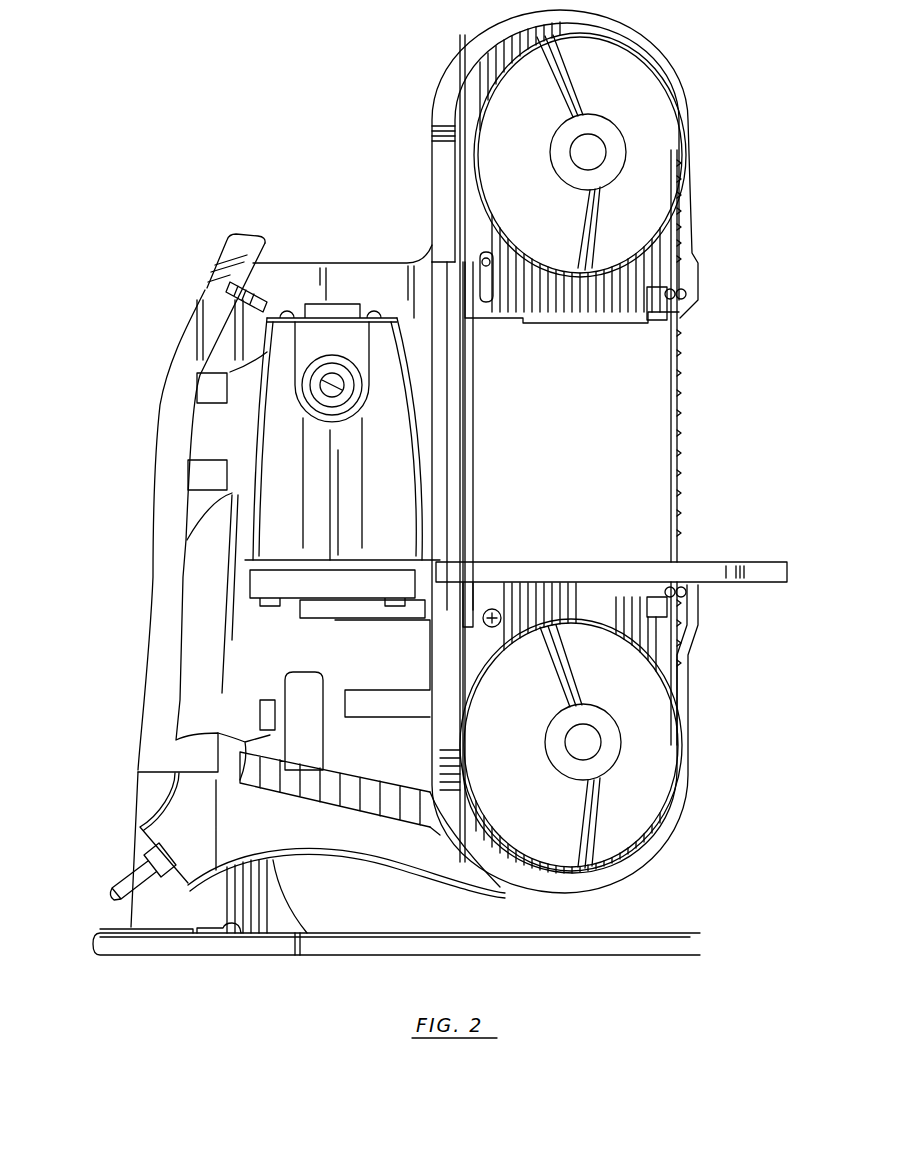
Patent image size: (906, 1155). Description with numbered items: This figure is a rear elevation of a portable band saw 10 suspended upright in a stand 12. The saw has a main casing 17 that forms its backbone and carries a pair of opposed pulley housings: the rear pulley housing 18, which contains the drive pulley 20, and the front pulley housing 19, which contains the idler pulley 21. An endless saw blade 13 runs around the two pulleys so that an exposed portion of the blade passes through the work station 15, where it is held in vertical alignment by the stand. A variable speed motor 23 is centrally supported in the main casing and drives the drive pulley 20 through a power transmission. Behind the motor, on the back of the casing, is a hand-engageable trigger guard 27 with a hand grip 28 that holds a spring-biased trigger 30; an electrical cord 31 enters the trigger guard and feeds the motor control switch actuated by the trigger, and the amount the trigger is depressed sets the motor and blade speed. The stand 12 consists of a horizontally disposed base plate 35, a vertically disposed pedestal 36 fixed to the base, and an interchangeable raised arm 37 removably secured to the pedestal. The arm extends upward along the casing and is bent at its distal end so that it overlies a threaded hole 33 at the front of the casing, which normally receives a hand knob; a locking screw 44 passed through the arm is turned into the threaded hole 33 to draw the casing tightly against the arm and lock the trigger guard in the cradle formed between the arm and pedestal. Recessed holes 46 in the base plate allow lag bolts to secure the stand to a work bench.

The portable band saw 10 is at (315, 208).
The stand 12 is at (126, 627).
The endless saw blade 13 is at (680, 398).
The work station 15 is at (756, 444).
The main casing 17 is at (356, 263).
The rear pulley housing 18 is at (690, 826).
The front pulley housing 19 is at (690, 135).
The drive pulley 20 is at (660, 765).
The idler pulley 21 is at (655, 85).
The variable speed motor 23 is at (400, 440).
The trigger guard 27 is at (376, 871).
The hand grip 28 is at (435, 858).
The trigger 30 is at (237, 745).
The electrical cord 31 is at (114, 868).
The threaded hole 33 is at (213, 287).
The base plate 35 is at (340, 944).
The pedestal 36 is at (132, 800).
The raised arm 37 is at (152, 511).
The locking screw 44 is at (205, 290).
The recessed holes 46 is at (220, 936).